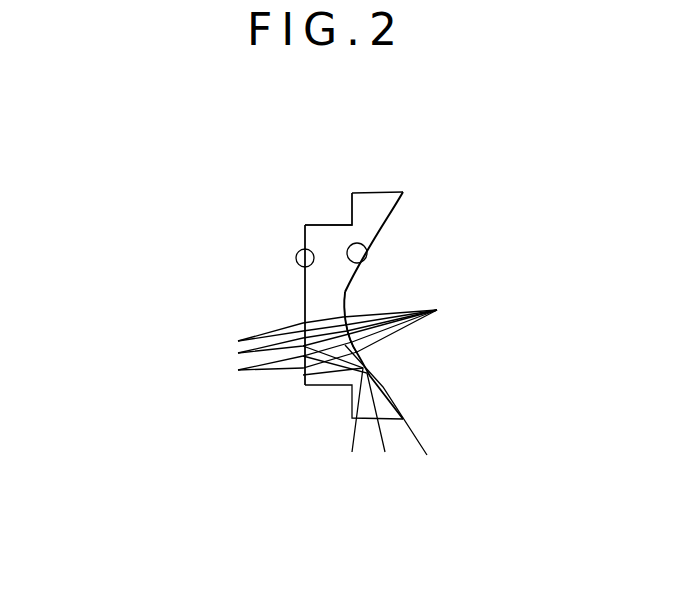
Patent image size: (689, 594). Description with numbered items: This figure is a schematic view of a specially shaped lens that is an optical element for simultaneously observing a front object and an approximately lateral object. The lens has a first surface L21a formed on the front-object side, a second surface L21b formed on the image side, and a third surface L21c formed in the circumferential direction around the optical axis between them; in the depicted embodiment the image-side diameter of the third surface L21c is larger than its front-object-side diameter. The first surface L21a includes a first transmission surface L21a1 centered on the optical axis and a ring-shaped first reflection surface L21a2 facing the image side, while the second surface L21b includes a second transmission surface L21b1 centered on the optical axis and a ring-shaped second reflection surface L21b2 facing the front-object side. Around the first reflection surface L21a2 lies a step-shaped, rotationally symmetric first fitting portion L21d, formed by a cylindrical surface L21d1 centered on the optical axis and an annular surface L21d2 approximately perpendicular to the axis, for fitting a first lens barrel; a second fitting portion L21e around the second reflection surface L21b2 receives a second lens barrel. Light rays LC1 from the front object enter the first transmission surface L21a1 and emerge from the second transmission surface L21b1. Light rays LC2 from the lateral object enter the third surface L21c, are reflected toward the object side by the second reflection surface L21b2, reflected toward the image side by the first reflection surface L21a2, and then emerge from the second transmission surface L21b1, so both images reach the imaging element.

The first surface L21a is at (120, 238).
The first transmission surface L21a1 is at (304, 289).
The first reflection surface L21a2 is at (298, 270).
The second surface L21b is at (525, 212).
The second transmission surface L21b1 is at (345, 288).
The second reflection surface L21b2 is at (365, 262).
The third surface L21c is at (376, 191).
The first fitting portion L21d is at (252, 125).
The cylindrical surface L21d1 is at (327, 224).
The annular surface L21d2 is at (351, 219).
The second fitting portion L21e is at (395, 206).
The light rays from the front-object side LC1 is at (238, 341).
The light rays from the approximately-lateral-object side LC2 is at (427, 455).